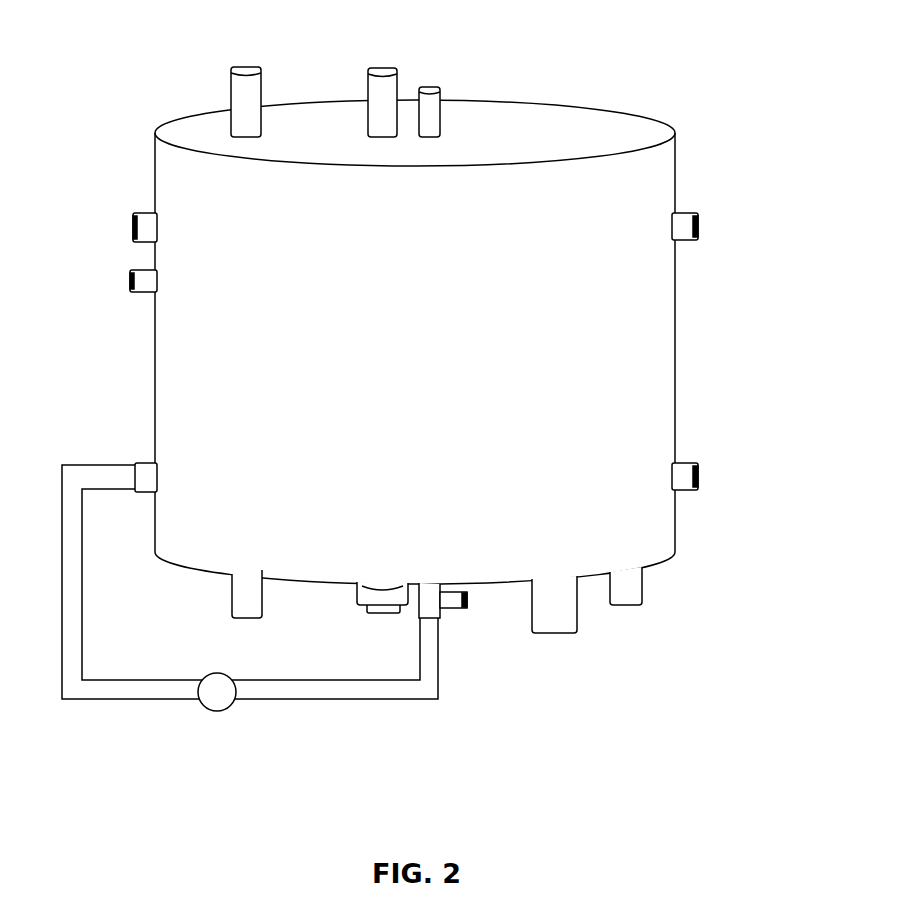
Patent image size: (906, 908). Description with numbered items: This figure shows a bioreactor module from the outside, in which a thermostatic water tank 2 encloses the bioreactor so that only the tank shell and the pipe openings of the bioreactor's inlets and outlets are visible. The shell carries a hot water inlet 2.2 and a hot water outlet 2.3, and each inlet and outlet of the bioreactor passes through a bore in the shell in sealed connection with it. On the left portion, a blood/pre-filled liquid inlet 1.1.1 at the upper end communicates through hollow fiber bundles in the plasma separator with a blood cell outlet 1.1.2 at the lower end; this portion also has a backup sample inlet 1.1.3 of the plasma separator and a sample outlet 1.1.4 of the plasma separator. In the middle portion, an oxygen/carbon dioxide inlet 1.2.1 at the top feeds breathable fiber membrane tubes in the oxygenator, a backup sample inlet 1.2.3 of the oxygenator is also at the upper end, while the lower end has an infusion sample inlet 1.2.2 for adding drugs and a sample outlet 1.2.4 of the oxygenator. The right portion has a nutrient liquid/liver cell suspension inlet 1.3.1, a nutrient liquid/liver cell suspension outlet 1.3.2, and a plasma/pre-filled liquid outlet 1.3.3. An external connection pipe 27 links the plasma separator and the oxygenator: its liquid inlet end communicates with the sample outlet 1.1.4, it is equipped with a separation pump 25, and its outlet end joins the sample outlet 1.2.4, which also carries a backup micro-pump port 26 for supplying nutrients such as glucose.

The thermostatic water tank 2 is at (632, 372).
The blood/pre-filled liquid inlet 1.1.1 is at (232, 90).
The blood cell outlet 1.1.2 is at (247, 608).
The backup sample inlet of the plasma separator 1.1.3 is at (155, 225).
The sample outlet of the plasma separator 1.1.4 is at (143, 470).
The oxygen/carbon dioxide inlet 1.2.1 is at (383, 93).
The infusion sample inlet 1.2.2 is at (382, 617).
The backup sample inlet of the oxygenator 1.2.3 is at (435, 122).
The sample outlet of the oxygenator 1.2.4 is at (428, 607).
The nutrient liquid/liver cell suspension inlet 1.3.1 is at (753, 203).
The nutrient liquid/liver cell suspension outlet 1.3.2 is at (757, 450).
The plasma/pre-filled liquid outlet 1.3.3 is at (668, 662).
The hot water inlet 2.2 is at (137, 287).
The hot water outlet 2.3 is at (642, 590).
The separation pump 25 is at (207, 704).
The backup micro-pump port 26 is at (455, 610).
The external connection pipe 27 is at (272, 693).